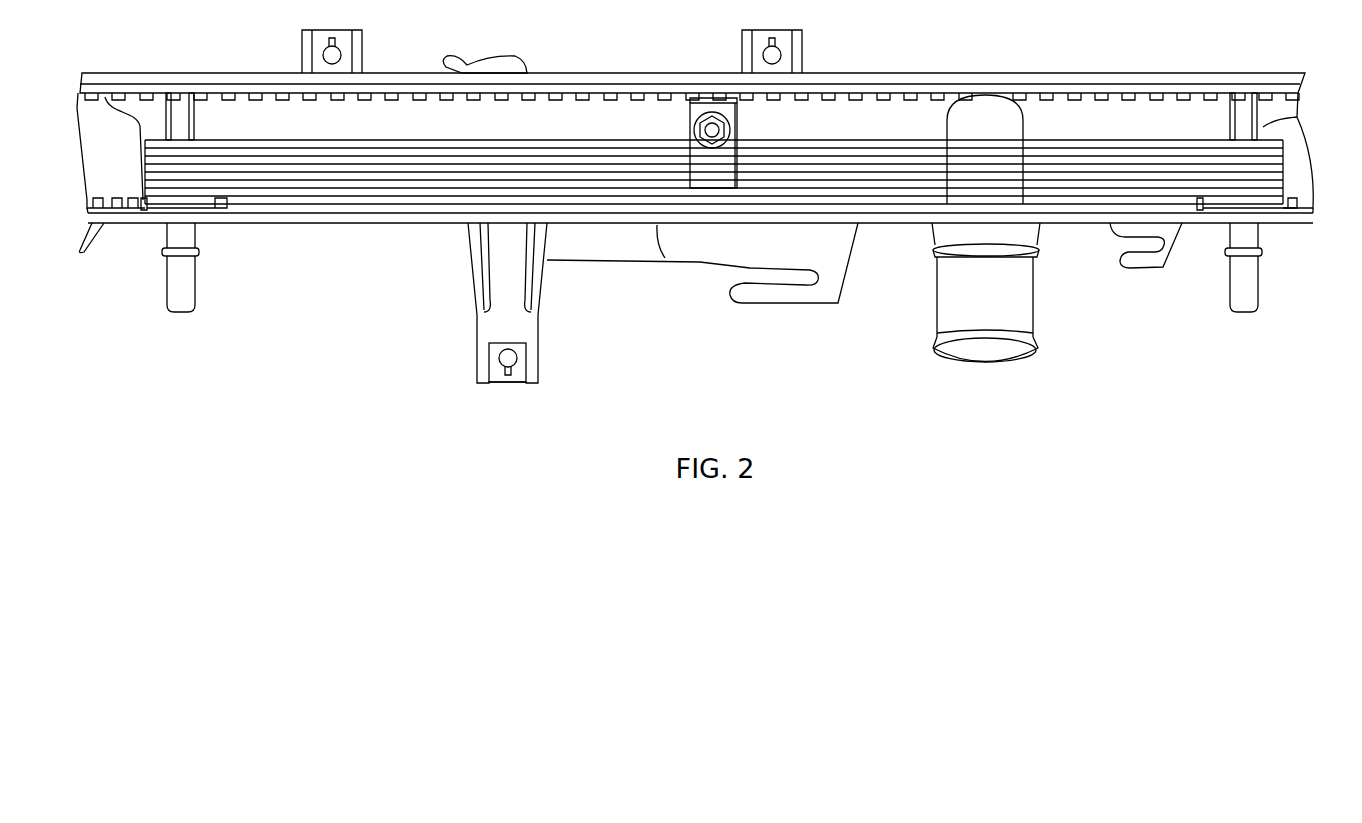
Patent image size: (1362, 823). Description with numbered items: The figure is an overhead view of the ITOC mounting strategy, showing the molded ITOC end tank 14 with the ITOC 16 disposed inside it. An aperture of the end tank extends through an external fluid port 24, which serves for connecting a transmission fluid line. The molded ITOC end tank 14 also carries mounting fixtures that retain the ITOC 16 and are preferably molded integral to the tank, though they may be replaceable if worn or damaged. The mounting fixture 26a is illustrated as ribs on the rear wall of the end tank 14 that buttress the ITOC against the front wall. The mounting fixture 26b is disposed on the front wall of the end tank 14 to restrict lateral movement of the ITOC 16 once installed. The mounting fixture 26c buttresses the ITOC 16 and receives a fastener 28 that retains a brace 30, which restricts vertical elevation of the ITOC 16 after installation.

The molded ITOC end tank 14 is at (887, 228).
The ITOC 16 is at (905, 172).
The external fluid port 24 is at (185, 292).
The ITOC mounting fixture 26a is at (197, 108).
The ITOC mounting fixture 26b is at (142, 204).
The ITOC mounting fixture 26c is at (703, 100).
The fastener 28 is at (721, 132).
The brace 30 is at (713, 115).